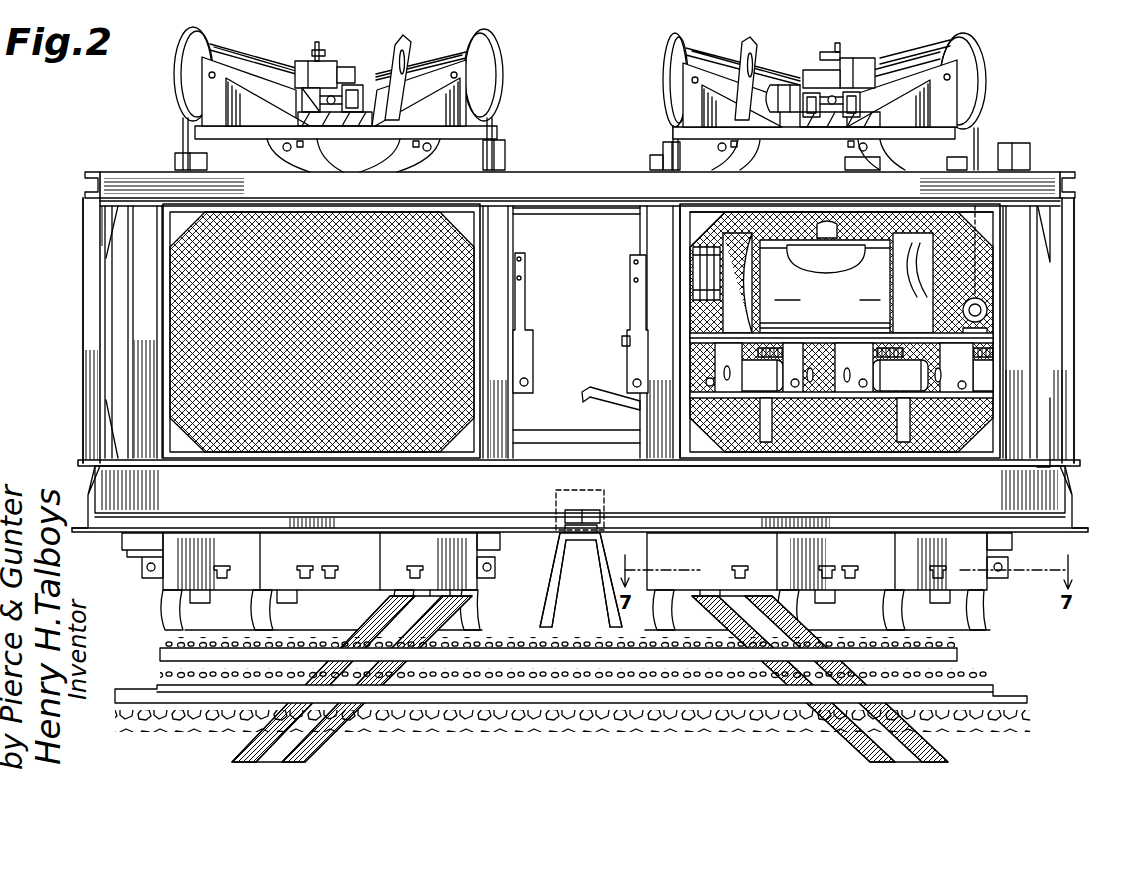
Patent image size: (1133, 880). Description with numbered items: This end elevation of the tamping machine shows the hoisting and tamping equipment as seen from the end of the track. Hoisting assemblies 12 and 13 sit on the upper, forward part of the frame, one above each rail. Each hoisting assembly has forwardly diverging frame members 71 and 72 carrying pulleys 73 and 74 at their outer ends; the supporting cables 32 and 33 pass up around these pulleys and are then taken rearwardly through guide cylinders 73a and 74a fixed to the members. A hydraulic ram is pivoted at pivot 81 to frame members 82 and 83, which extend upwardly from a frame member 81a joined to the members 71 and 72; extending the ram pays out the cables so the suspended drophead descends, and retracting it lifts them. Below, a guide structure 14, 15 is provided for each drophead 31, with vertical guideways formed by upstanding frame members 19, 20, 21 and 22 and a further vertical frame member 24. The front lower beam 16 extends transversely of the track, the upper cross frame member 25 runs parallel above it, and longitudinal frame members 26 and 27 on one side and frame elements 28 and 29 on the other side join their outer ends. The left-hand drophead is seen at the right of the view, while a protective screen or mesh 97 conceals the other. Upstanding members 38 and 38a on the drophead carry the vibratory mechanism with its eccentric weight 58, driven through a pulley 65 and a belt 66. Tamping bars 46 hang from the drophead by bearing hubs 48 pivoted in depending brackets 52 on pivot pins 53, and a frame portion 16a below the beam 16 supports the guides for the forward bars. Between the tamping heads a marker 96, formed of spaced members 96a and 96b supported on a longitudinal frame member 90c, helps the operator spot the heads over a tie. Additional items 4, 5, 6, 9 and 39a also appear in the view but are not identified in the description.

The rail 4 is at (240, 746).
The ballast 5 is at (165, 648).
The rail 6 is at (990, 660).
The center frame bay 9 is at (530, 438).
The hoisting assembly 12 is at (832, 87).
The hoisting assembly 13 is at (261, 43).
The guide structure 14 is at (1086, 288).
The guide structure 15 is at (74, 306).
The front lower beam 16 is at (540, 485).
The frame portion 16a is at (382, 545).
The upstanding frame member 19 is at (1020, 345).
The upstanding frame member 20 is at (648, 310).
The upstanding frame member 21 is at (500, 314).
The upstanding frame member 22 is at (142, 332).
The vertical frame member 24 is at (1066, 250).
The upper cross frame member 25 is at (583, 176).
The upper longitudinal frame member 26 is at (1076, 185).
The lower longitudinal frame member 27 is at (1076, 492).
The upper frame element 28 is at (85, 183).
The lower frame element 29 is at (86, 482).
The drophead 31 is at (626, 342).
The cable 32 is at (492, 130).
The cable 33 is at (183, 130).
The upstanding member 38 is at (918, 314).
The upstanding member 38a is at (745, 215).
The block 39a is at (1032, 153).
The tamping bar 46 is at (753, 411).
The bearing hub 48 is at (876, 392).
The depending bracket 52 is at (823, 392).
The pivot pin 53 is at (800, 392).
The eccentric weight 58 is at (825, 277).
The pulley 65 is at (693, 268).
The belt 66 is at (724, 283).
The frame member 71 is at (908, 78).
The frame member 72 is at (740, 45).
The pulley 73 is at (988, 78).
The guide cylinder 73a is at (917, 50).
The pulley 74 is at (664, 73).
The guide cylinder 74a is at (718, 82).
The pivot 81 is at (829, 97).
The frame member 81a is at (806, 137).
The frame member 82 is at (862, 105).
The frame member 83 is at (812, 95).
The longitudinal frame member 90c is at (606, 495).
The marker 96 is at (550, 569).
The marker member 96a is at (556, 594).
The marker member 96b is at (614, 618).
The protective screen 97 is at (455, 250).